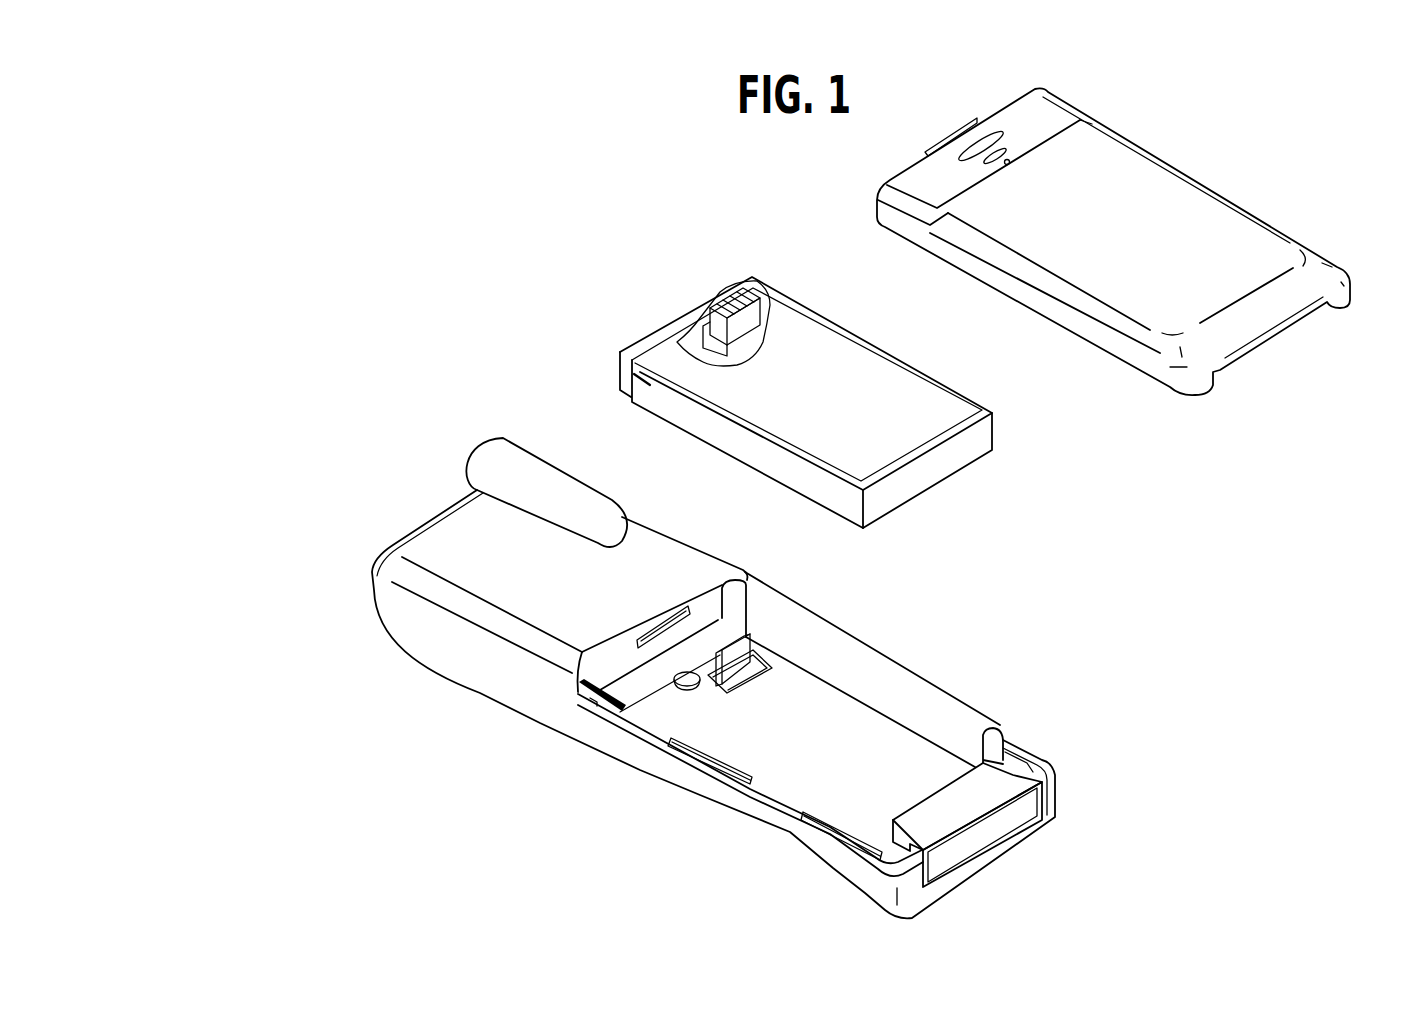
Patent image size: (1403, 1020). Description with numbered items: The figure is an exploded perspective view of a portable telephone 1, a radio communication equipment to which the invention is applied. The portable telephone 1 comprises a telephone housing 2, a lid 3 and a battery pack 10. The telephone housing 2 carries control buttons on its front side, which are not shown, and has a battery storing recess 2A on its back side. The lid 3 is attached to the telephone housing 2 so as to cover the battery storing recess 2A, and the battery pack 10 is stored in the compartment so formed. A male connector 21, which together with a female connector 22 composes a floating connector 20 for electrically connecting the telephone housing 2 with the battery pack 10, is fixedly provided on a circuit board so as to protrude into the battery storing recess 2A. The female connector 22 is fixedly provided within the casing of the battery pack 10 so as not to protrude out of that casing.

The portable telephone 1 is at (475, 272).
The telephone housing 2 is at (512, 678).
The battery storing recess 2A is at (818, 758).
The lid 3 is at (1190, 228).
The battery pack 10 is at (928, 463).
The floating connector 20 is at (703, 290).
The male connector 21 is at (747, 655).
The female connector 22 is at (743, 293).